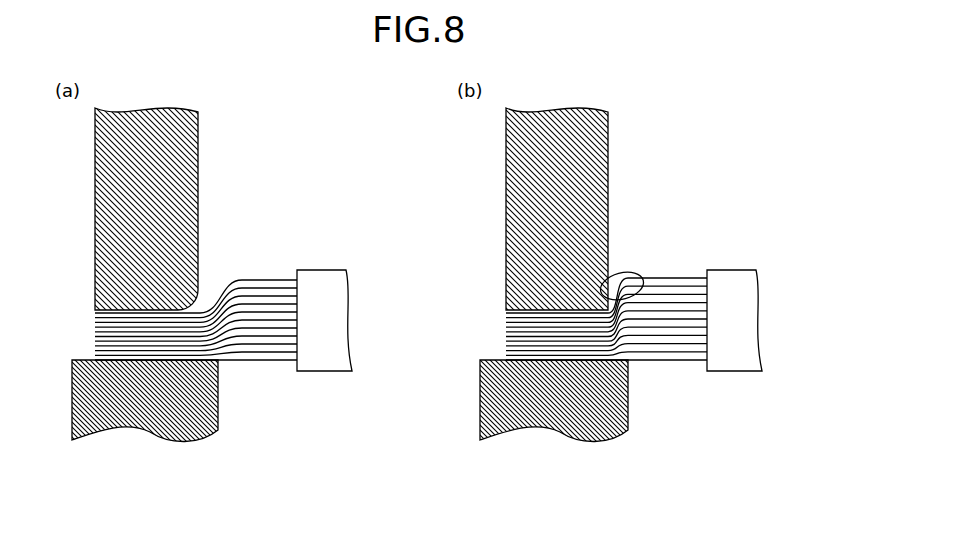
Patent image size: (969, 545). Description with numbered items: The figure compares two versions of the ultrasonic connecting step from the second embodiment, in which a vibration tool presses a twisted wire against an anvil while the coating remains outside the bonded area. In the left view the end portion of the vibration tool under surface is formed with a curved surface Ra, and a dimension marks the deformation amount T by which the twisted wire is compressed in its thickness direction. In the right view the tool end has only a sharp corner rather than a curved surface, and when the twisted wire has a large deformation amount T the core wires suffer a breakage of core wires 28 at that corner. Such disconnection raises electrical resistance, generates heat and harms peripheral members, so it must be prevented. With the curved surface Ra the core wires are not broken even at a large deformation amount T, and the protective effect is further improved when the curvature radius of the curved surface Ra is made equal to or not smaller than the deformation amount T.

The breakage of core wires 28 is at (625, 272).
The curved surface of end portion of vibration tool under surface Ra is at (184, 303).
The deformation amount in thickness direction of twisted wire T is at (200, 312).